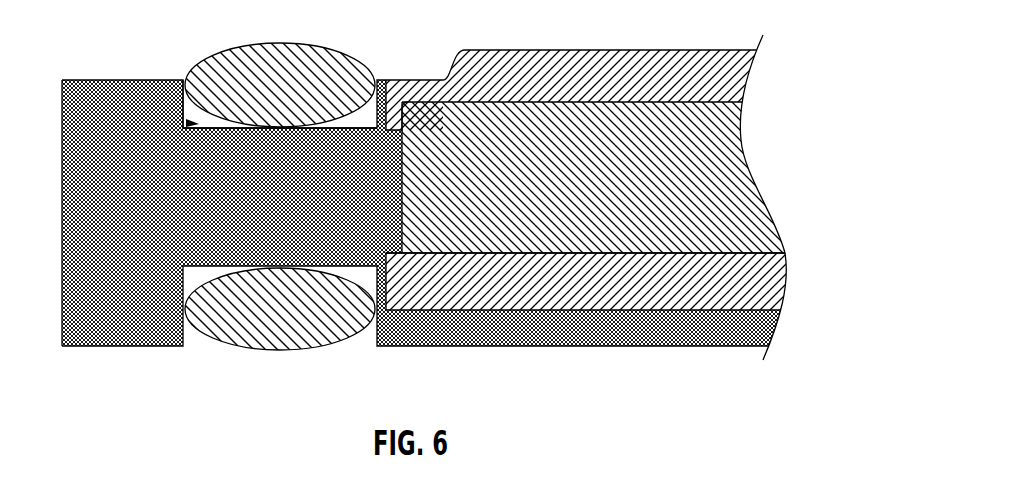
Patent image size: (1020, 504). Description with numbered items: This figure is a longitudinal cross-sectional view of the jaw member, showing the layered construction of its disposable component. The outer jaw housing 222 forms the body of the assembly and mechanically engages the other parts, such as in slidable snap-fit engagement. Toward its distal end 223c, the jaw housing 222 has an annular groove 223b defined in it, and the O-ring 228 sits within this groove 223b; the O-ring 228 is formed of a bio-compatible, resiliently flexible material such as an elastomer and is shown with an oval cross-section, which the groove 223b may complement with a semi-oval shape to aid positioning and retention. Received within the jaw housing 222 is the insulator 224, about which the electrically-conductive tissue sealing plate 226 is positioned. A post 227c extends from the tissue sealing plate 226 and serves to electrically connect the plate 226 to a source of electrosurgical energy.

The jaw housing 222 is at (128, 331).
The annular groove 223b is at (184, 123).
The distal end 223c is at (61, 140).
The insulator 224 is at (731, 168).
The tissue sealing plate 226 is at (628, 65).
The post 227c is at (402, 93).
The O-ring 228 is at (278, 57).